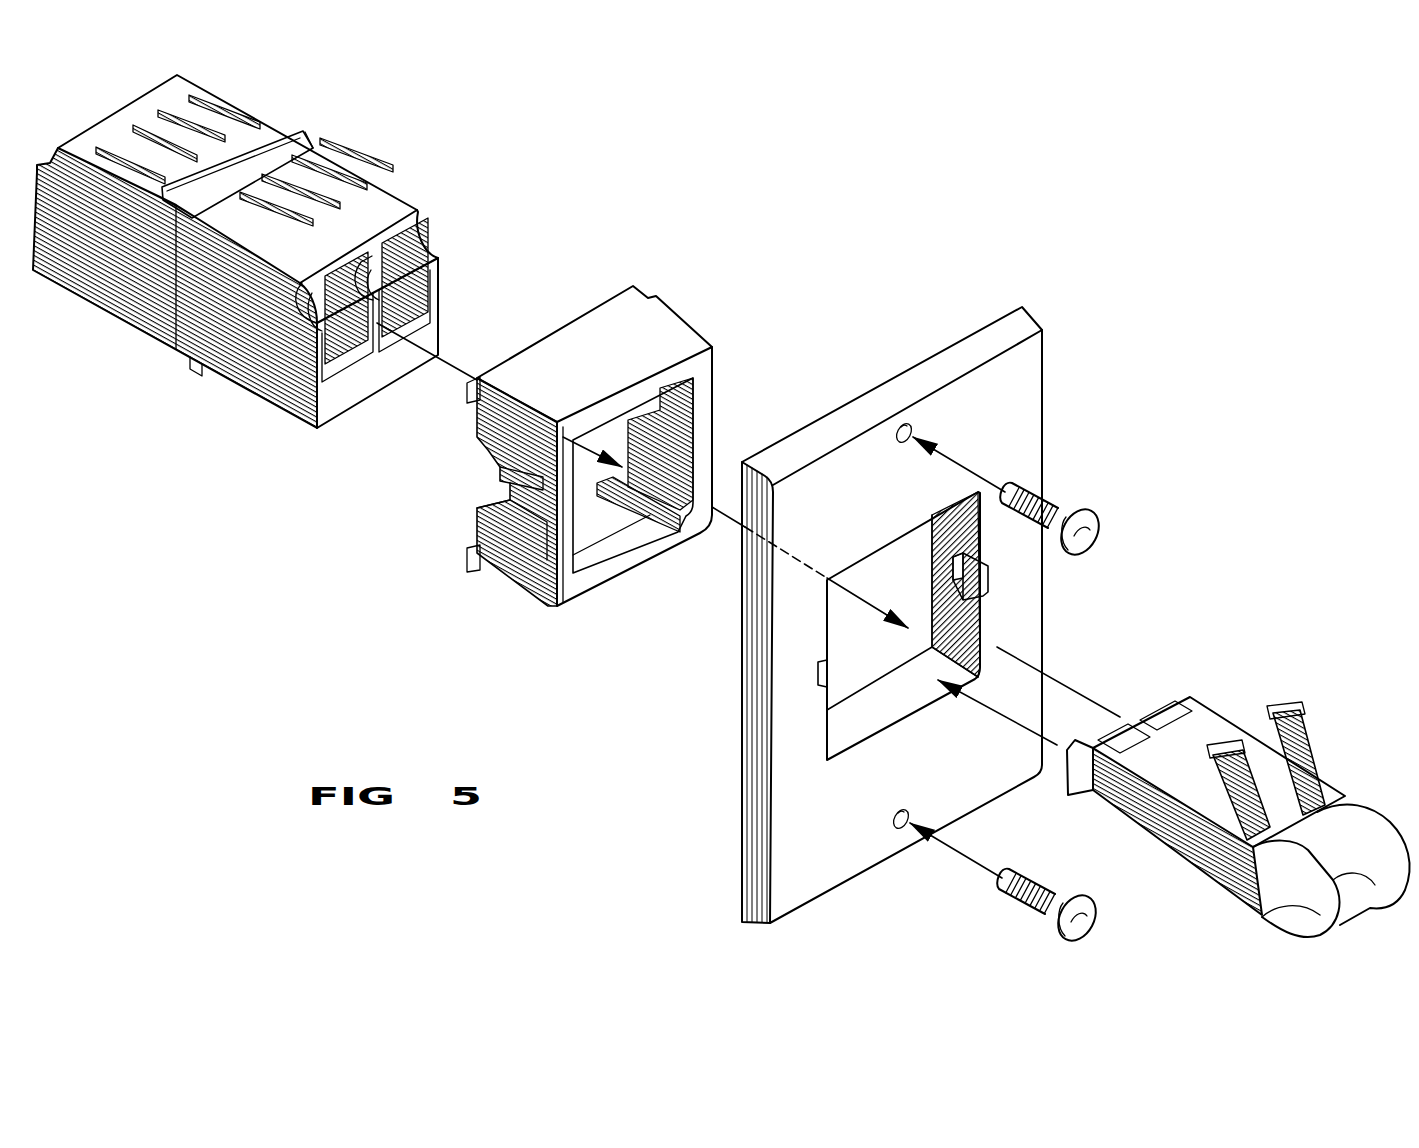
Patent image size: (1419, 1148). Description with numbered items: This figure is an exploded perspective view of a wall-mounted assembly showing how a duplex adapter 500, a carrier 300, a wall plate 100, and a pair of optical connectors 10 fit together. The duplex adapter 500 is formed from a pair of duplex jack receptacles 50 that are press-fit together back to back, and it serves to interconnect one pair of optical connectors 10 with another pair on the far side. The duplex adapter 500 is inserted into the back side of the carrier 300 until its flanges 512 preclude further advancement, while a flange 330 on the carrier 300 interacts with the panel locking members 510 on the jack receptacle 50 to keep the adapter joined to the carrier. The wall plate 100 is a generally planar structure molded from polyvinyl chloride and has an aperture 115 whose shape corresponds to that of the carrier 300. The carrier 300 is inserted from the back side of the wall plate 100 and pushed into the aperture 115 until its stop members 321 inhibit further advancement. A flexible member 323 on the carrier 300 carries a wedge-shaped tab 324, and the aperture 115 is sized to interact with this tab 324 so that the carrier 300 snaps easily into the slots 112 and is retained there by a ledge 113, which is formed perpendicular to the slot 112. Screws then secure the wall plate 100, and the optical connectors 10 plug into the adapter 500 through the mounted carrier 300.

The duplex adapter 500 is at (263, 76).
The duplex jack receptacle 50 is at (95, 316).
The panel locking member 510 is at (312, 158).
The flange 512 is at (314, 149).
The carrier 300 is at (575, 422).
The stop member 321 is at (475, 418).
The flexible member 323 is at (516, 476).
The wedge-shaped tab 324 is at (478, 520).
The flange 330 is at (598, 488).
The wall plate 100 is at (935, 601).
The aperture 115 is at (849, 562).
The ledge 113 is at (955, 577).
The slot 112 is at (990, 594).
The optical connector 10 is at (1215, 690).